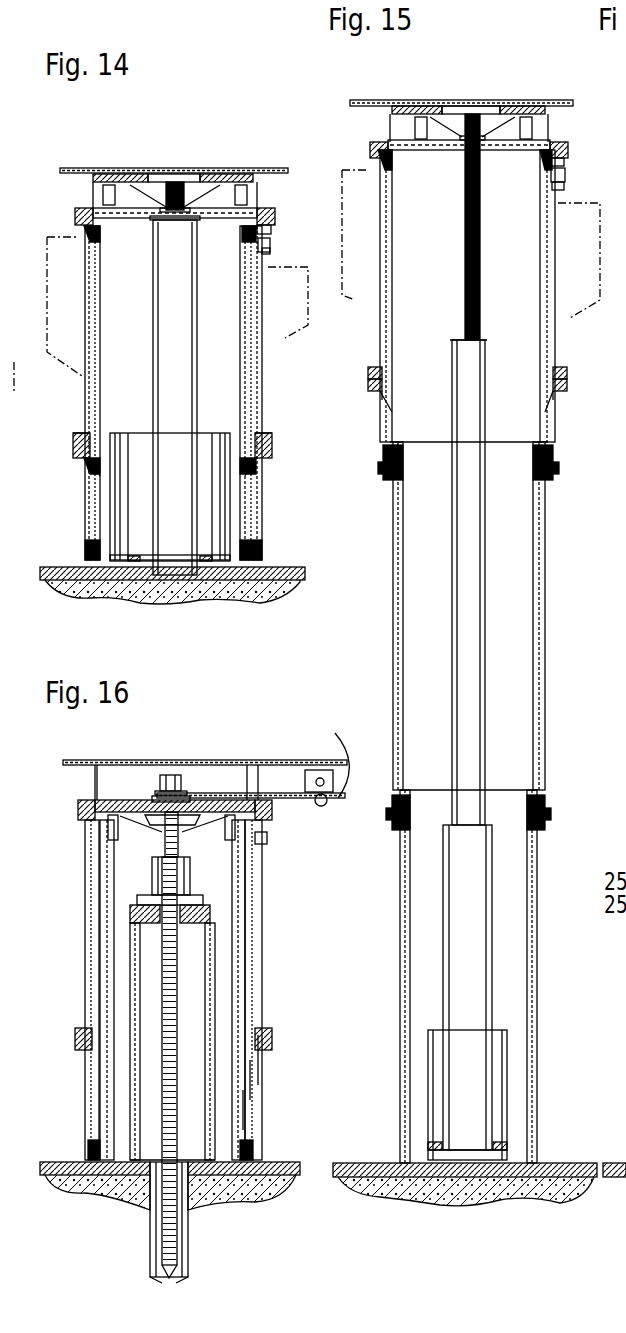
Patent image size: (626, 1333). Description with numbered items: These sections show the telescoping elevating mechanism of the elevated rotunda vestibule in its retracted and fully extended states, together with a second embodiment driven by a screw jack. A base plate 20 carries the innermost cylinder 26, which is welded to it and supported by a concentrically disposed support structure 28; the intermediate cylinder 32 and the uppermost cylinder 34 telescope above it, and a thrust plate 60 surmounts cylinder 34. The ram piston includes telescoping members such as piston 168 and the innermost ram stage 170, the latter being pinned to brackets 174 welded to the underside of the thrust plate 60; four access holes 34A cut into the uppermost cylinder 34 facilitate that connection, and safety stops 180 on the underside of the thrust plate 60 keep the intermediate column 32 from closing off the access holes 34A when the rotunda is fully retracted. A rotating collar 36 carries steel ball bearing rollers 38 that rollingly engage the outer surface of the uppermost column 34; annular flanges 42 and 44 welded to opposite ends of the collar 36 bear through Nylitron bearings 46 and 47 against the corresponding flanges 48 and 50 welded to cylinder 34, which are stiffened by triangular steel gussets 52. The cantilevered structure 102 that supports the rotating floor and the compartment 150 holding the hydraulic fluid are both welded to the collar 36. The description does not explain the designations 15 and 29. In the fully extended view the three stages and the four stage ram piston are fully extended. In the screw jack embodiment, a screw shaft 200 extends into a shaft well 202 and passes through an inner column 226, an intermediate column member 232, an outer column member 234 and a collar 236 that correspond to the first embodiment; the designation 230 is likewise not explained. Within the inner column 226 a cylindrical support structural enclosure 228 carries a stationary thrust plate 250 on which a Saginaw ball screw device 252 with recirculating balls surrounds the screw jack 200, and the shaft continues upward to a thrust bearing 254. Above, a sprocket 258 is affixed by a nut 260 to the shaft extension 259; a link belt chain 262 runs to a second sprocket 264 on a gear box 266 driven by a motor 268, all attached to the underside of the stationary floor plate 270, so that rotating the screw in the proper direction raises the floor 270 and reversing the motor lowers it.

In FIG. 15, the section line 15 is at (590, 262).
In FIG. 14, the base plate 20 is at (283, 570).
In FIG. 15, the base plate 20 is at (538, 1163).
In FIG. 16, the base plate 20 is at (262, 1163).
In FIG. 14, the innermost cylinder 26 is at (243, 516).
In FIG. 15, the innermost cylinder 26 is at (538, 860).
In FIG. 14, the support structure 28 is at (215, 513).
In FIG. 15, the support structure 28 is at (512, 1053).
In FIG. 14, the bottom bearing 29 is at (128, 540).
In FIG. 15, the bottom bearing 29 is at (500, 1140).
In FIG. 15, the intermediate cylinder 32 is at (548, 635).
In FIG. 15, the uppermost cylinder 34 is at (550, 452).
In FIG. 14, the access holes 34A is at (262, 210).
In FIG. 15, the access holes 34A is at (552, 140).
In FIG. 15, the rotating collar 36 is at (556, 330).
In FIG. 14, the steel ball bearing rollers 38 is at (268, 254).
In FIG. 15, the steel ball bearing rollers 38 is at (565, 186).
In FIG. 14, the annular flange 42 is at (270, 245).
In FIG. 15, the annular flange 42 is at (567, 178).
In FIG. 14, the annular flange 44 is at (272, 440).
In FIG. 15, the annular flange 44 is at (566, 370).
In FIG. 14, the Nylitron bearing 46 is at (272, 229).
In FIG. 15, the Nylitron bearing 46 is at (566, 160).
In FIG. 15, the Nylitron bearing 47 is at (568, 383).
In FIG. 14, the flange 48 is at (272, 220).
In FIG. 15, the flange 48 is at (562, 148).
In FIG. 14, the flange 50 is at (262, 462).
In FIG. 15, the flange 50 is at (560, 395).
In FIG. 14, the triangular steel gussets 52 is at (86, 212).
In FIG. 15, the triangular steel gussets 52 is at (382, 140).
In FIG. 14, the thrust plate 60 is at (132, 170).
In FIG. 15, the thrust plate 60 is at (550, 120).
In FIG. 14, the cantilevered structure 102 is at (80, 370).
In FIG. 15, the cantilevered structure 102 is at (374, 193).
In FIG. 14, the compartment 150 is at (308, 325).
In FIG. 14, the piston 168 is at (178, 385).
In FIG. 15, the piston 168 is at (470, 598).
In FIG. 14, the innermost ram 170 is at (184, 176).
In FIG. 15, the innermost ram 170 is at (482, 175).
In FIG. 14, the brackets 174 is at (135, 174).
In FIG. 15, the brackets 174 is at (440, 106).
In FIG. 14, the safety stops 180 is at (225, 172).
In FIG. 15, the safety stops 180 is at (425, 104).
In FIG. 16, the screw jack shaft 200 is at (165, 985).
In FIG. 16, the shaft well 202 is at (190, 1243).
In FIG. 16, the inner column 226 is at (243, 1110).
In FIG. 16, the cylindrical support structural enclosure 228 is at (212, 945).
In FIG. 16, the intermediate tube 230 is at (123, 940).
In FIG. 16, the intermediate column member 232 is at (250, 1085).
In FIG. 16, the outer column member 234 is at (258, 1062).
In FIG. 16, the collar 236 is at (258, 967).
In FIG. 16, the stationary thrust plate 250 is at (210, 915).
In FIG. 16, the Saginaw ball screw device 252 is at (195, 878).
In FIG. 16, the thrust bearing 254 is at (155, 830).
In FIG. 16, the sprocket 258 is at (160, 795).
In FIG. 16, the shaft extension 259 is at (170, 777).
In FIG. 16, the nut 260 is at (182, 777).
In FIG. 16, the link belt chain 262 is at (268, 760).
In FIG. 16, the sprocket 264 is at (328, 802).
In FIG. 16, the gear box 266 is at (328, 772).
In FIG. 16, the motor 268 is at (340, 790).
In FIG. 16, the stationary floor plate 270 is at (275, 765).